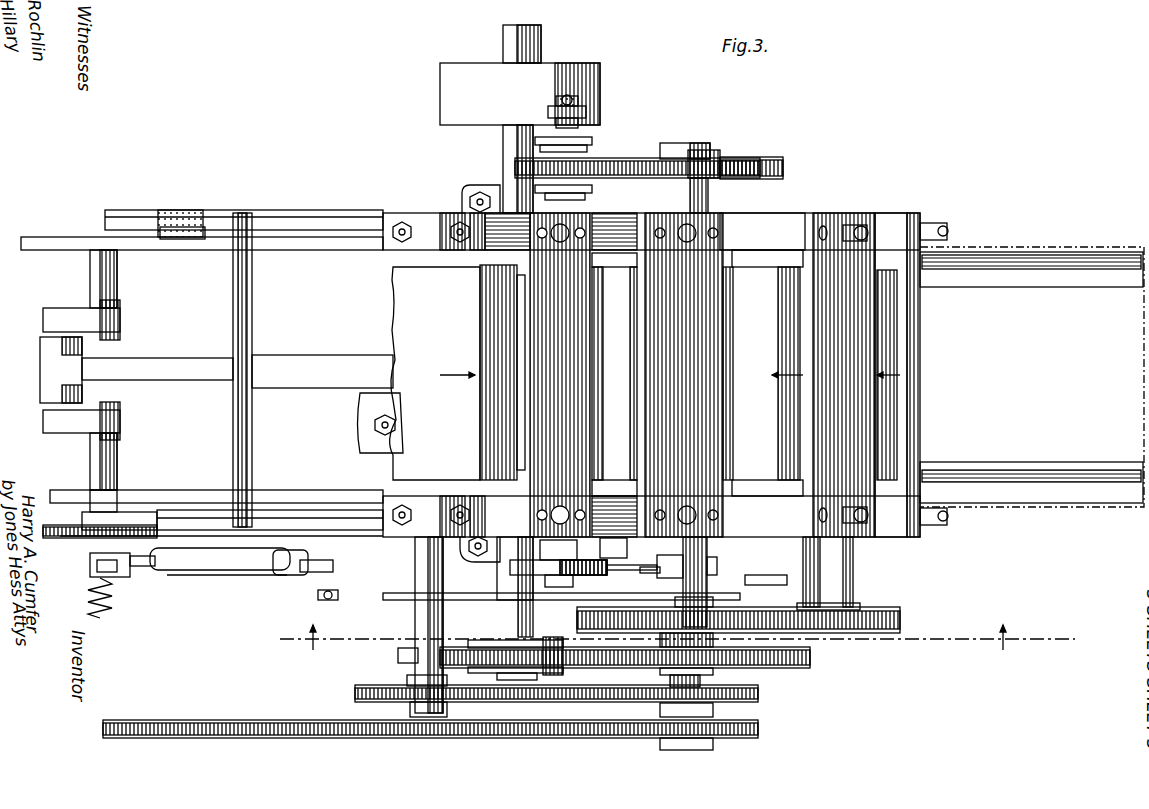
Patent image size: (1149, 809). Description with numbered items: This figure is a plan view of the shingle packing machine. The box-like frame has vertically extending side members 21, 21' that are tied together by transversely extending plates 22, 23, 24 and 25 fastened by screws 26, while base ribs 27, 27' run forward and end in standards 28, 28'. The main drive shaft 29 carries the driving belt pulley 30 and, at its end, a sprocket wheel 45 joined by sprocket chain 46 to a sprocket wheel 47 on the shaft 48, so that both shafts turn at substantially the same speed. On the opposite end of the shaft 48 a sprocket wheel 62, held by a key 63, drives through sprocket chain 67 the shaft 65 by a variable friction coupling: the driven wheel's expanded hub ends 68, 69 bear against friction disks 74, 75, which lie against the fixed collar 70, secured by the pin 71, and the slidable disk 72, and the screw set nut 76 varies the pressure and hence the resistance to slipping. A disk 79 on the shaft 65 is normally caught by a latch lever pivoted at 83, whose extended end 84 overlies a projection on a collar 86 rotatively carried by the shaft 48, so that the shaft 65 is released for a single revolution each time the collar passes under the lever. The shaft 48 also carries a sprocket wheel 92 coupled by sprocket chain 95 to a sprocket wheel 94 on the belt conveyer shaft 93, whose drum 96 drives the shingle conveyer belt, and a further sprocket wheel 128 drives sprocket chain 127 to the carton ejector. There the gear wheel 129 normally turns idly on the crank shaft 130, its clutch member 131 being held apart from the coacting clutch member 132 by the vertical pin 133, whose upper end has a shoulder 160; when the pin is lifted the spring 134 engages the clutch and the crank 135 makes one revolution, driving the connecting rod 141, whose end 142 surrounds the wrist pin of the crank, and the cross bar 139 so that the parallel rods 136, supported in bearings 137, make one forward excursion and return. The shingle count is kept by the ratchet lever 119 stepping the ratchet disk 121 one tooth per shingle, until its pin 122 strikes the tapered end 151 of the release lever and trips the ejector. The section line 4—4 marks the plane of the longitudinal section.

The section line 4 is at (677, 637).
The main drive shaft 29 is at (532, 34).
The driving belt pulley 30 is at (520, 94).
The shaft 65 is at (570, 98).
The screw set nut 76 is at (586, 110).
The disk 72 is at (592, 138).
The expanded hub end 68 is at (588, 149).
The friction disk 75 is at (640, 160).
The shaft 48 is at (690, 143).
The sprocket wheel 62 is at (715, 150).
The sprocket chain 67 is at (745, 158).
The key 63 is at (708, 200).
The expanded hub end 69 is at (592, 188).
The friction disk 74 is at (590, 197).
The belt conveyer shaft 93 is at (462, 205).
The pin 71 is at (536, 216).
The fixed collar 70 is at (572, 212).
The vertical side member 21 is at (834, 216).
The vertical side member 21' is at (915, 537).
The screws 26 is at (825, 226).
The transversely extending plate 22 is at (580, 372).
The transversely extending plate 23 is at (718, 383).
The transversely extending plate 24 is at (860, 360).
The transversely extending plate 25 is at (905, 385).
The base rib 27 is at (244, 206).
The bearing 137 is at (180, 212).
The reciprocatable rod 136 is at (220, 222).
The standard 28 is at (202, 231).
The cross bar 139 is at (252, 290).
The crank 135 is at (62, 312).
The connecting rod end 142 is at (45, 370).
The connecting rod 141 is at (176, 368).
The crank shaft 130 is at (125, 440).
The pin 133 is at (82, 512).
The clutch member 131 is at (118, 520).
The standard 28' is at (216, 479).
The base rib 27' is at (221, 497).
The drum or pulley 96 is at (392, 455).
The gear wheel 129 is at (80, 524).
The shoulder 160 is at (95, 570).
The spring 134 is at (112, 592).
The clutch member 132 is at (180, 552).
The tapered end 151 is at (206, 572).
The pin 122 is at (278, 570).
The ratchet disk 121 is at (310, 575).
The ratchet lever 119 is at (320, 598).
The disk 79 is at (510, 570).
The pivot 83 is at (660, 562).
The extended end 84 is at (660, 575).
The collar 86 is at (735, 530).
The sprocket wheel 45 is at (555, 645).
The sprocket chain 46 is at (612, 648).
The sprocket wheel 94 is at (410, 680).
The sprocket chain 95 is at (590, 702).
The sprocket wheel 47 is at (720, 675).
The sprocket wheel 92 is at (720, 708).
The sprocket chain 127 is at (305, 720).
The sprocket wheel 128 is at (715, 742).